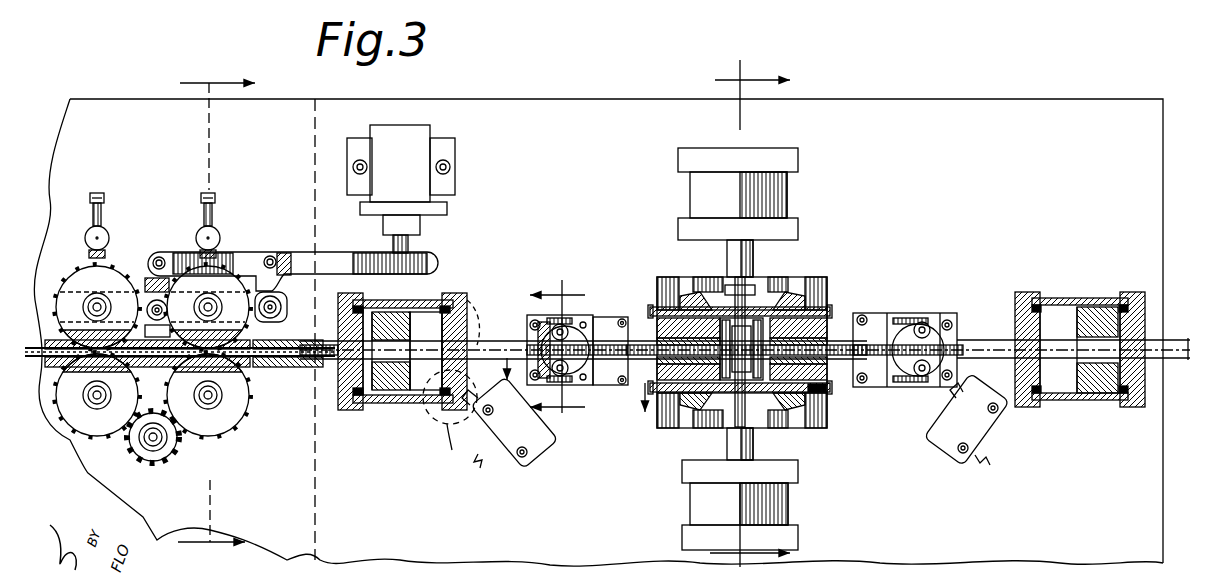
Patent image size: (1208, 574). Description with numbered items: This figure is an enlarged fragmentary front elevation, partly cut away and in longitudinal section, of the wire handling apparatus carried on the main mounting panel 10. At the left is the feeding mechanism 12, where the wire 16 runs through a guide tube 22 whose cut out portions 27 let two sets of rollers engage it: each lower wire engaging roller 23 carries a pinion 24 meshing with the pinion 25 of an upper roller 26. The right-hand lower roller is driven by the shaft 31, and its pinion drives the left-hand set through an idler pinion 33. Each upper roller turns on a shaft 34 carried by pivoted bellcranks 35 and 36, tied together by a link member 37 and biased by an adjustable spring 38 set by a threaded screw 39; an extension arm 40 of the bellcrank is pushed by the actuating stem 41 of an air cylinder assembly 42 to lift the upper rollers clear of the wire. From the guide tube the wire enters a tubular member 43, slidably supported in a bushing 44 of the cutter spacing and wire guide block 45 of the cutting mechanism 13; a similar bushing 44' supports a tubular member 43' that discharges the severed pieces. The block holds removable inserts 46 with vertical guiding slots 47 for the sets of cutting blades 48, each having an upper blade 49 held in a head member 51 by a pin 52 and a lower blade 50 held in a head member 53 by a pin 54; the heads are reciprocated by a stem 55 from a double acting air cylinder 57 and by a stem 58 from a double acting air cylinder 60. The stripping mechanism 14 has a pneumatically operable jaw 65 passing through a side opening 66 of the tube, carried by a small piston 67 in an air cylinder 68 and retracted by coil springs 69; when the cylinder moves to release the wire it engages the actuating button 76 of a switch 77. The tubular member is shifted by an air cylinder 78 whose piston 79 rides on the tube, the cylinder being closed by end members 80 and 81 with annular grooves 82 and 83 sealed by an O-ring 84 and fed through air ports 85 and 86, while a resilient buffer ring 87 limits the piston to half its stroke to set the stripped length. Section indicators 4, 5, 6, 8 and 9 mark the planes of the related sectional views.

The main mounting panel 10 is at (1030, 99).
The feeding mechanism 12 is at (160, 188).
The cutting mechanism 13 is at (818, 248).
The stripping mechanism 14 is at (490, 290).
The wire 16 is at (40, 356).
The guide tube 22 is at (50, 342).
The lower wire engaging roller 23 is at (240, 420).
The pinion 24 is at (250, 405).
The pinion 25 is at (88, 265).
The upper roller 26 is at (76, 286).
The cut out portions 27 is at (155, 332).
The shaft 31 is at (203, 400).
The idler pinion 33 is at (160, 460).
The shaft 34 is at (152, 307).
The bellcrank 35 is at (153, 278).
The bellcrank 36 is at (286, 300).
The link member 37 is at (184, 252).
The adjustable spring 38 is at (107, 234).
The threaded screw 39 is at (95, 195).
The extension arm 40 is at (350, 256).
The actuating stem 41 is at (410, 248).
The air cylinder assembly 42 is at (430, 142).
The tubular member 43 is at (745, 338).
The tubular member 43' is at (1073, 329).
The bushing 44 is at (697, 322).
The bushing 44' is at (906, 336).
The cutter spacing and wire guide block 45 is at (655, 310).
The removable inserts 46 is at (660, 412).
The vertical guiding slots 47 is at (705, 395).
The cutting blades 48 is at (798, 395).
The upper blade 49 is at (760, 307).
The lower blade 50 is at (763, 400).
The head member 51 is at (695, 290).
The pin 52 is at (815, 292).
The head member 53 is at (828, 392).
The pin 54 is at (826, 390).
The stem 55 is at (730, 272).
The double acting air cylinder 57 is at (718, 196).
The stem 58 is at (727, 445).
The double acting air cylinder 60 is at (711, 504).
The jaw 65 is at (572, 350).
The side opening 66 is at (610, 351).
The small piston 67 is at (548, 320).
The air cylinder 68 is at (585, 328).
The coil springs 69 is at (563, 324).
The actuating button 76 is at (538, 385).
The switch 77 is at (530, 458).
The air cylinder 78 is at (412, 400).
The piston 79 is at (404, 373).
The end member 80 is at (345, 406).
The end member 81 is at (463, 293).
The annular groove 82 is at (364, 404).
The annular groove 83 is at (440, 296).
The O-ring 84 is at (380, 430).
The air port 85 is at (328, 344).
The air port 86 is at (480, 322).
The buffer ring 87 is at (386, 395).
The section line 4- 4 is at (750, 313).
The section line 5- 5 is at (216, 311).
The section line 6 is at (450, 420).
The section line 8 is at (563, 386).
The section line 9- 9 is at (557, 349).